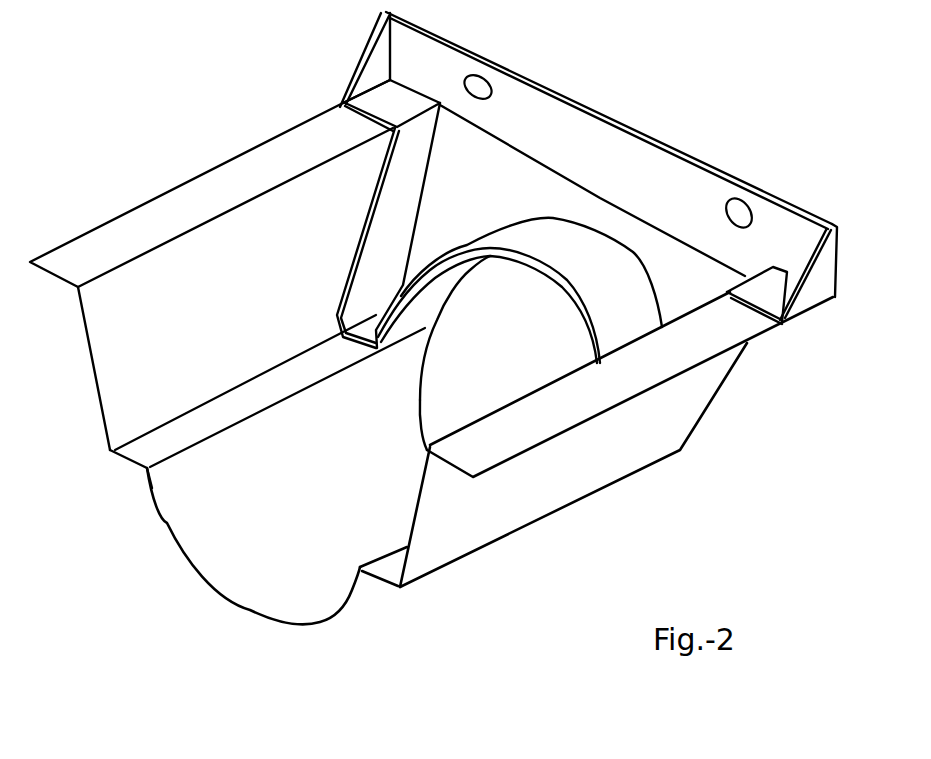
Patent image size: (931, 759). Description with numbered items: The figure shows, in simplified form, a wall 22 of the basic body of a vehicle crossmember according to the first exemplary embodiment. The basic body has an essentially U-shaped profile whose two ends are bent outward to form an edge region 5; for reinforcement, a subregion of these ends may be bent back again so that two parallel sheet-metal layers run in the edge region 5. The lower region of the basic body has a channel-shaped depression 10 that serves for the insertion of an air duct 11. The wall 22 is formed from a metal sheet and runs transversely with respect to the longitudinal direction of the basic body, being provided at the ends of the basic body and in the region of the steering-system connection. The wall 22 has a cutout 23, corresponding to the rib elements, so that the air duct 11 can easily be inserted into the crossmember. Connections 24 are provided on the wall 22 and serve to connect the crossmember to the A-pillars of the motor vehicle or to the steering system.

The edge region 5 is at (227, 177).
The channel-shaped depression 10 is at (275, 593).
The air duct 11 is at (268, 548).
The wall 22 is at (514, 200).
The cutout 23 is at (543, 300).
The connection 24 is at (487, 83).